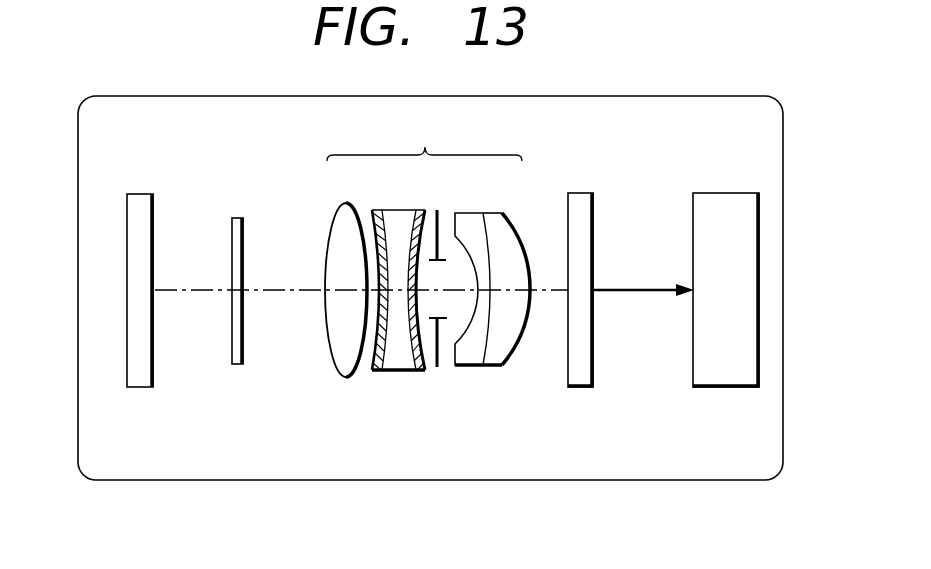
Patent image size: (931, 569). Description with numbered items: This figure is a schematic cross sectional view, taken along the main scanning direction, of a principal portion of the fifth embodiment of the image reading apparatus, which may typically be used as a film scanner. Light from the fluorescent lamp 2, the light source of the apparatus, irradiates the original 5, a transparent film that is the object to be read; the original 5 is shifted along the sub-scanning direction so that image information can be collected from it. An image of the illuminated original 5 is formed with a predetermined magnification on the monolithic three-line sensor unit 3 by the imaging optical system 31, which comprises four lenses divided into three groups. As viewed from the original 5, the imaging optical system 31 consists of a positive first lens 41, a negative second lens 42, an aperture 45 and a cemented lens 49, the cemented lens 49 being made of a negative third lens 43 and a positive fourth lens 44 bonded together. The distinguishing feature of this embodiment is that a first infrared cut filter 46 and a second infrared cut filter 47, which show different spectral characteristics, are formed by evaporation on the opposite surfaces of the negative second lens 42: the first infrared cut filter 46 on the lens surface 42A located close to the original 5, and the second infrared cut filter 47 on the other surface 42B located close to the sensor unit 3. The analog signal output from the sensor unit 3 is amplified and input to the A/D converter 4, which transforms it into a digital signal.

The fluorescent lamp 2 is at (140, 207).
The original 5 is at (238, 224).
The imaging optical system 31 is at (425, 145).
The positive first lens 41 is at (344, 360).
The negative second lens 42 is at (386, 315).
The lens surface 42A is at (382, 214).
The other surface 42B is at (419, 214).
The first infrared cut filter 46 is at (378, 342).
The second infrared cut filter 47 is at (423, 370).
The aperture 45 is at (445, 363).
The negative third lens 43 is at (473, 355).
The positive fourth lens 44 is at (470, 418).
The cemented lens 49 is at (507, 338).
The monolithic 3-line sensor unit 3 is at (578, 207).
The A/D converter 4 is at (725, 207).